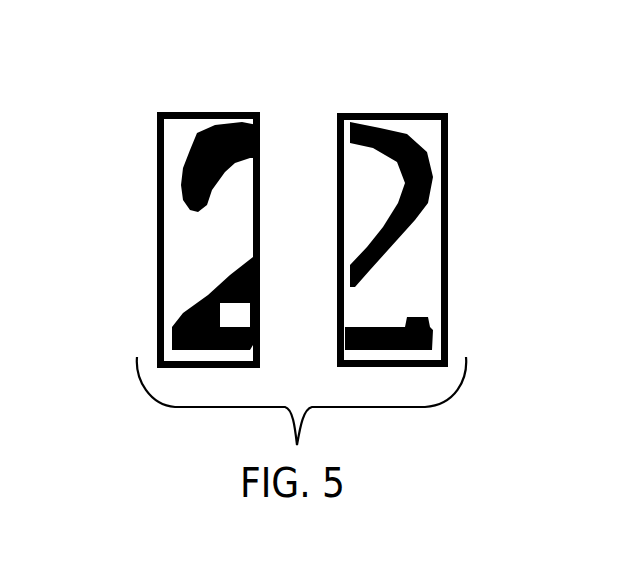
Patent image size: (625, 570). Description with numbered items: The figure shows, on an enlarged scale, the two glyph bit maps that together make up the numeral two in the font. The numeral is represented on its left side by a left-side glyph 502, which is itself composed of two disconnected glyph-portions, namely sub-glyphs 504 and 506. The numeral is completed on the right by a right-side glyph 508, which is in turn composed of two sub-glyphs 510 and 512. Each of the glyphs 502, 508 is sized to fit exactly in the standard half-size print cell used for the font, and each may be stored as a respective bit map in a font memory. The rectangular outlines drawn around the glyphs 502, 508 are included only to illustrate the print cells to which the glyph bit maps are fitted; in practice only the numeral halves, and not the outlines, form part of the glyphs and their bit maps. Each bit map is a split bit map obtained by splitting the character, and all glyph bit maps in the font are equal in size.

The left-side glyph 502 is at (265, 86).
The sub-glyph 504 is at (199, 134).
The sub-glyph 506 is at (186, 291).
The right-side glyph 508 is at (363, 91).
The sub-glyph 510 is at (415, 126).
The sub-glyph 512 is at (415, 300).